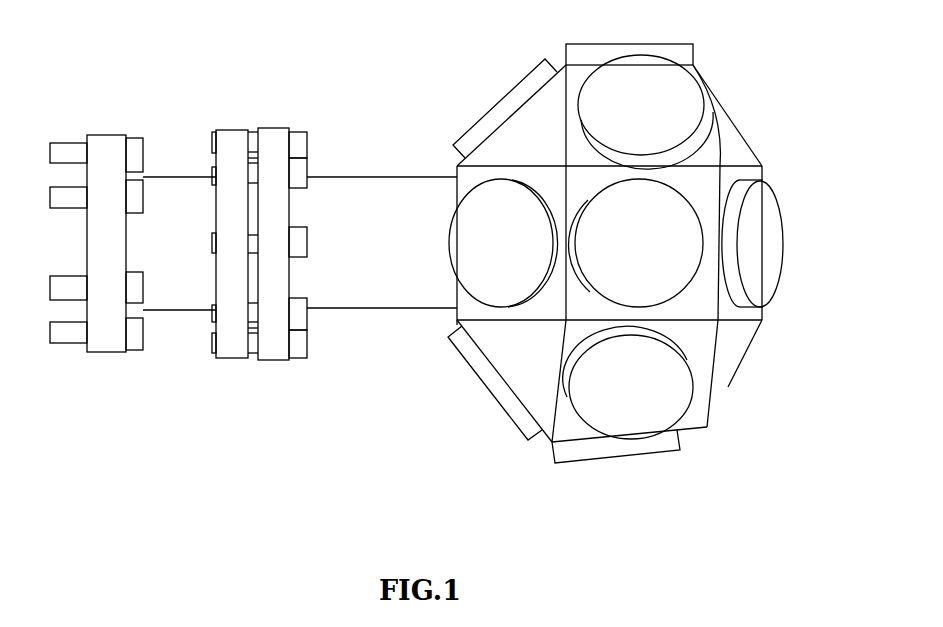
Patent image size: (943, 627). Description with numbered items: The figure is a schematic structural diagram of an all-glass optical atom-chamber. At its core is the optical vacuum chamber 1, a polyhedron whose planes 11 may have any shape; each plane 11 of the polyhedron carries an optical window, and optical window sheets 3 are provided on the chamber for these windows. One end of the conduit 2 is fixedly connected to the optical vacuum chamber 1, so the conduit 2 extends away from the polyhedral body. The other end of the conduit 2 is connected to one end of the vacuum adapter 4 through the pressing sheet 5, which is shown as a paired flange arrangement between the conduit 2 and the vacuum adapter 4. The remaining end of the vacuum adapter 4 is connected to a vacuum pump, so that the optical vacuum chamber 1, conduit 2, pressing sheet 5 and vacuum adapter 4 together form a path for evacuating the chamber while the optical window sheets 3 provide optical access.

The optical vacuum chamber 1 is at (728, 387).
The plane 11 is at (710, 187).
The conduit 2 is at (361, 313).
The optical window sheet 3 is at (485, 392).
The vacuum adapter 4 is at (183, 313).
The pressing sheet 5 is at (278, 360).